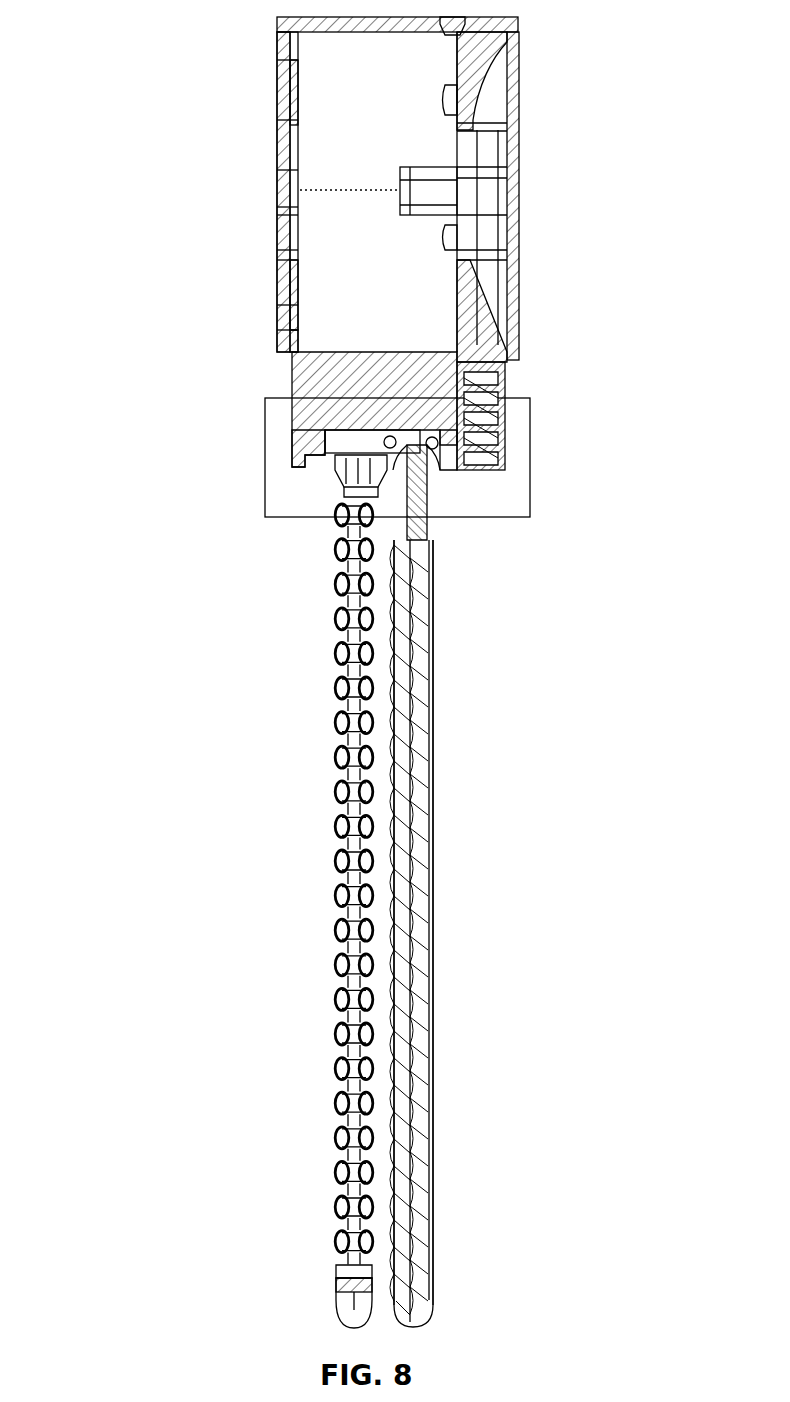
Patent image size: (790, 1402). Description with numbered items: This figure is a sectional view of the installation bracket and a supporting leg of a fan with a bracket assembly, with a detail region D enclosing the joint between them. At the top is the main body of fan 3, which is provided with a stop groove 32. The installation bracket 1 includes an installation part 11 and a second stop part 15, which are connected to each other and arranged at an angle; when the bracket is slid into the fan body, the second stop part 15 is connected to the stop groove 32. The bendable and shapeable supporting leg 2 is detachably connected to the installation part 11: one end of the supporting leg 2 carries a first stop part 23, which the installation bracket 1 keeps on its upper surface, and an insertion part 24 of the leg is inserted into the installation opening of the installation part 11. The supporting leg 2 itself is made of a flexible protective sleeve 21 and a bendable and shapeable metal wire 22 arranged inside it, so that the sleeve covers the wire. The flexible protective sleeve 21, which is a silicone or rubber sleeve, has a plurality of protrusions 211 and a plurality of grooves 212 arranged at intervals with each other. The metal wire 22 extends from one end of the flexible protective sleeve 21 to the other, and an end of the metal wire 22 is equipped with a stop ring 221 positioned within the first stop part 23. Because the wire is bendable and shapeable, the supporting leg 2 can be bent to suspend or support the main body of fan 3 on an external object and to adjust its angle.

The main body of fan 3 is at (262, 328).
The stop groove 32 is at (298, 430).
The second stop part 15 is at (292, 445).
The detail region D is at (258, 450).
The installation bracket 1 is at (338, 470).
The installation part 11 is at (338, 476).
The first stop part 23 is at (482, 412).
The stop ring 221 is at (470, 447).
The insertion part 24 is at (440, 476).
The flexible protective sleeve 21 is at (511, 931).
The metal wire 22 is at (433, 647).
The protrusions 211 is at (433, 725).
The grooves 212 is at (433, 742).
The supporting leg 2 is at (322, 810).